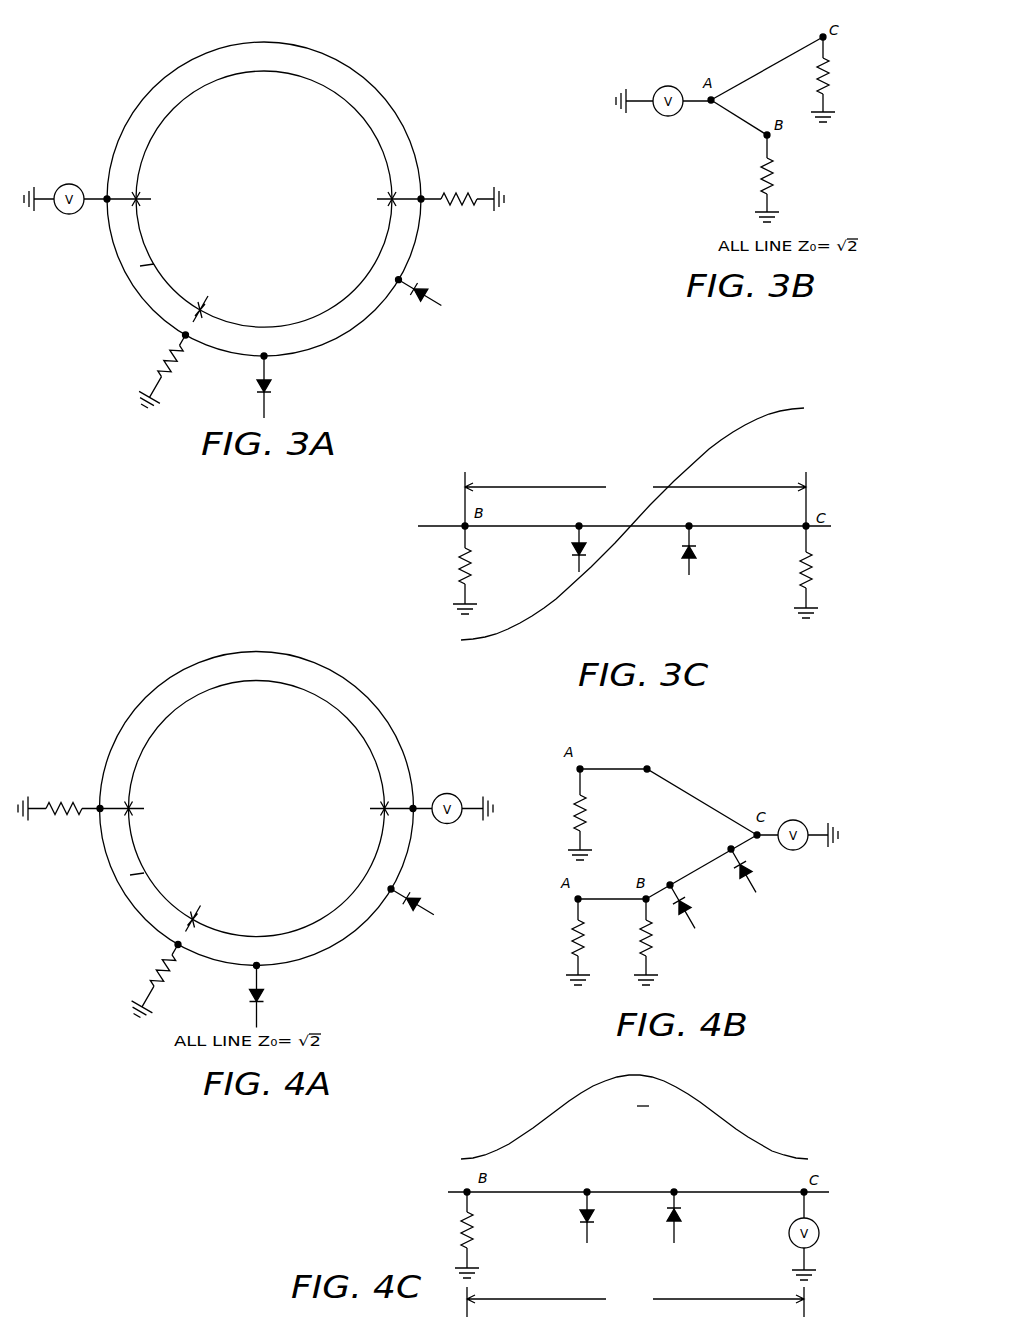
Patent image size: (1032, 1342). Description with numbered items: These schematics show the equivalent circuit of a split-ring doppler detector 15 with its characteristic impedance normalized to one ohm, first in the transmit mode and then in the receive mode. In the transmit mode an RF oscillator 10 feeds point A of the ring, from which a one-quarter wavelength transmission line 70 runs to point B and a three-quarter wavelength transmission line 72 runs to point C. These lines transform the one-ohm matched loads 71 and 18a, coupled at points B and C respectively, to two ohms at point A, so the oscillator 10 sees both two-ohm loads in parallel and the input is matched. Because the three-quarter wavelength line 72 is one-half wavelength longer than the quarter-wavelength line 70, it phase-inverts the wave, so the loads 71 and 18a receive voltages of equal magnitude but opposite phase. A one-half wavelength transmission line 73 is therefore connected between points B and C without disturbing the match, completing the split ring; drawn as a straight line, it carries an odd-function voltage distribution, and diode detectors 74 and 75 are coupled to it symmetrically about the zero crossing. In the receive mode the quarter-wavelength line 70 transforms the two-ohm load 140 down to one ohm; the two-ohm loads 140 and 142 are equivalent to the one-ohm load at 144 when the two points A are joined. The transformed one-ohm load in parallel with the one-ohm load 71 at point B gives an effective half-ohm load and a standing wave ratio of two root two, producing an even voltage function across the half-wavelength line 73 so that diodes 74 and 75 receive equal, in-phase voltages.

In FIG. 3A, the RF oscillator 10 is at (67, 183).
In FIG. 3B, the RF oscillator 10 is at (667, 86).
In FIG. 3A, the split-ring detector 15 is at (274, 153).
In FIG. 4A, the split-ring detector 15 is at (266, 760).
In FIG. 3A, the matched load 18a is at (457, 195).
In FIG. 3B, the matched load 18a is at (827, 88).
In FIG. 3C, the matched load 18a is at (815, 573).
In FIG. 3A, the one-quarter wavelength transmission line 70 is at (127, 278).
In FIG. 3B, the one-quarter wavelength transmission line 70 is at (735, 112).
In FIG. 4A, the one-quarter wavelength transmission line 70 is at (119, 888).
In FIG. 4B, the one-quarter wavelength transmission line 70 is at (612, 899).
In FIG. 3A, the matched load 71 is at (165, 378).
In FIG. 3B, the matched load 71 is at (773, 180).
In FIG. 3C, the matched load 71 is at (458, 566).
In FIG. 4B, the matched load 71 is at (650, 944).
In FIG. 4C, the matched load 71 is at (473, 1230).
In FIG. 3A, the three-quarter wavelength transmission line 72 is at (376, 88).
In FIG. 3B, the three-quarter wavelength transmission line 72 is at (740, 82).
In FIG. 4A, the three-quarter wavelength transmission line 72 is at (367, 698).
In FIG. 4B, the three-quarter wavelength transmission line 72 is at (678, 783).
In FIG. 3A, the one-half wavelength transmission line 73 is at (365, 317).
In FIG. 3C, the one-half wavelength transmission line 73 is at (667, 525).
In FIG. 4A, the one-half wavelength transmission line 73 is at (404, 860).
In FIG. 4B, the one-half wavelength transmission line 73 is at (688, 875).
In FIG. 4C, the one-half wavelength transmission line 73 is at (536, 1190).
In FIG. 3A, the diode detector 74 is at (268, 387).
In FIG. 3C, the diode detector 74 is at (570, 551).
In FIG. 4A, the diode detector 74 is at (268, 993).
In FIG. 4B, the diode detector 74 is at (685, 905).
In FIG. 4C, the diode detector 74 is at (595, 1218).
In FIG. 3A, the diode detector 75 is at (425, 292).
In FIG. 3C, the diode detector 75 is at (697, 552).
In FIG. 4A, the diode detector 75 is at (410, 906).
In FIG. 4B, the diode detector 75 is at (750, 870).
In FIG. 4C, the diode detector 75 is at (683, 1218).
In FIG. 4B, the 2-ohm load 140 is at (575, 951).
In FIG. 4B, the 2-ohm load 142 is at (583, 805).
In FIG. 4A, the 1-ohm load 144 is at (55, 800).